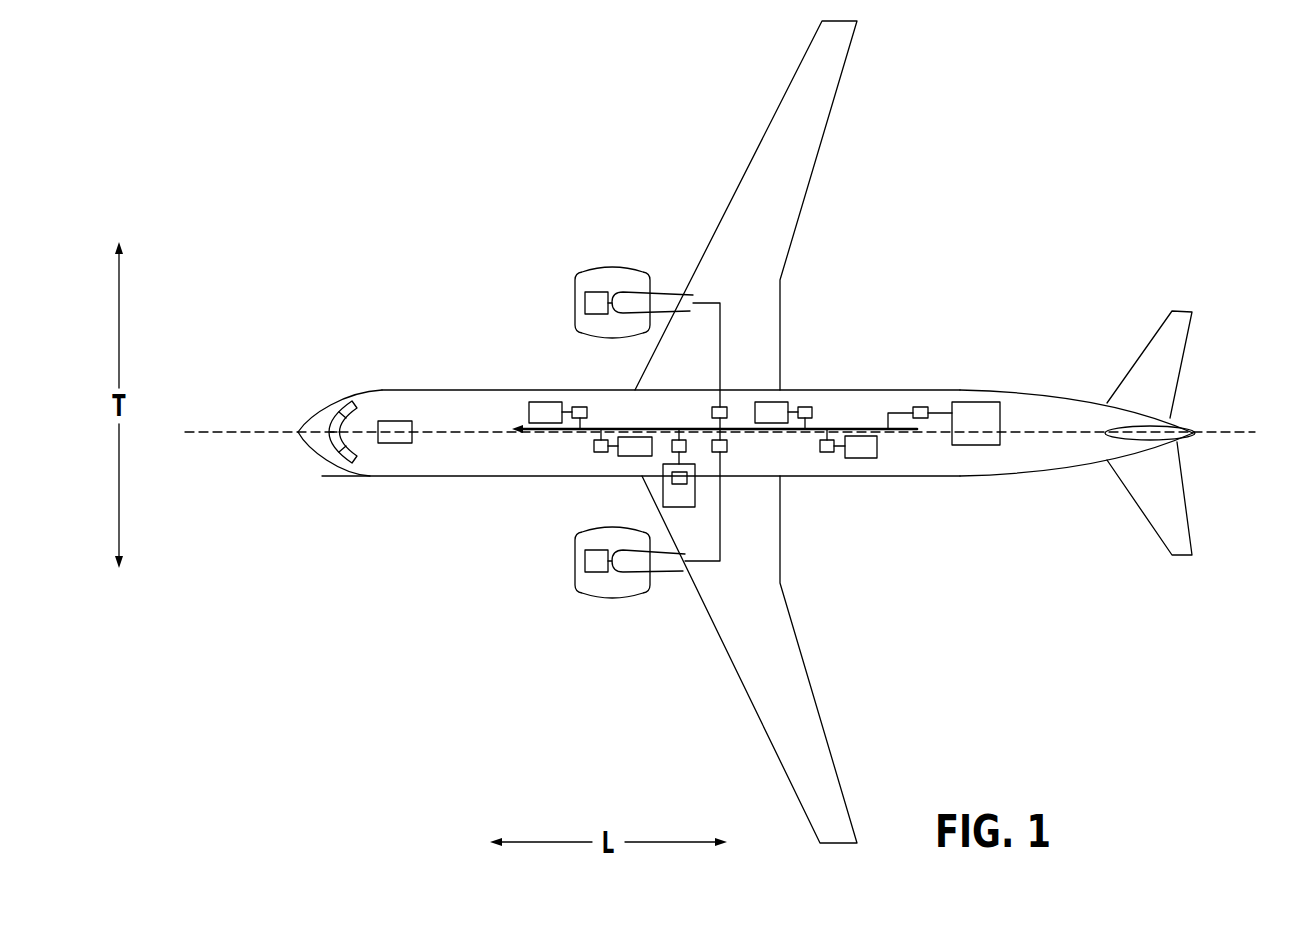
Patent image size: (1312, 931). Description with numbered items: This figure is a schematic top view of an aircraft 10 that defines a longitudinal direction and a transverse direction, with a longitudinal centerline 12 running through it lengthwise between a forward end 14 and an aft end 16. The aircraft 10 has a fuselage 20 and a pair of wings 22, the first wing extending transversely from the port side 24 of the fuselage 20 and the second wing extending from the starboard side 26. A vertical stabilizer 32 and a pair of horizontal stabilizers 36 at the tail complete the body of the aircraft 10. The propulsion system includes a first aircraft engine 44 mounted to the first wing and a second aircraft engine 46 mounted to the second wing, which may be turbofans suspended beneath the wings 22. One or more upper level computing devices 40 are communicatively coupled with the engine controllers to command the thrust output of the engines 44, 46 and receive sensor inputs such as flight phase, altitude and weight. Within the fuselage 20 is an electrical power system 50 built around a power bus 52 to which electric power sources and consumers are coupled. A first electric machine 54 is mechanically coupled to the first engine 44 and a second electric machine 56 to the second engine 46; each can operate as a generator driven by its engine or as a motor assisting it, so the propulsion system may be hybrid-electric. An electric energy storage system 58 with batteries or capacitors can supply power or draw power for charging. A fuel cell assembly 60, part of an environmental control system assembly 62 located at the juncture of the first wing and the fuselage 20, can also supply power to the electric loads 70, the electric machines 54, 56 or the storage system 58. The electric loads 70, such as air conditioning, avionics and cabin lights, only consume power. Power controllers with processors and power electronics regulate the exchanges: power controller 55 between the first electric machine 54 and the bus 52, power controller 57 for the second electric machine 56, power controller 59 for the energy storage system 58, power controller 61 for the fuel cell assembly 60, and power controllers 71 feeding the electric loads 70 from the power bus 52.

The aircraft 10 is at (323, 356).
The longitudinal centerline 12 is at (253, 430).
The forward end 14 is at (290, 520).
The aft end 16 is at (1198, 417).
The fuselage 20 is at (948, 390).
The pair of wings 22 is at (832, 73).
The port side 24 is at (592, 626).
The starboard side 26 is at (614, 189).
The vertical stabilizer 32 is at (1187, 440).
The pair of horizontal stabilizers 36 is at (1190, 537).
The upper level computing device 40 is at (395, 421).
The first aircraft engine 44 is at (585, 561).
The second aircraft engine 46 is at (605, 270).
The electrical power system 50 is at (756, 431).
The power bus 52 is at (852, 428).
The first electric machine 54 is at (600, 572).
The power controller 55 is at (727, 446).
The second electric machine 56 is at (585, 303).
The power controller 57 is at (718, 407).
The electric energy storage system 58 is at (996, 400).
The power controller 59 is at (918, 402).
The fuel cell assembly 60 is at (690, 480).
The power controller 61 is at (672, 450).
The environmental control system assembly 62 is at (710, 514).
The electric loads 70 is at (547, 402).
The power controllers 71 is at (580, 407).